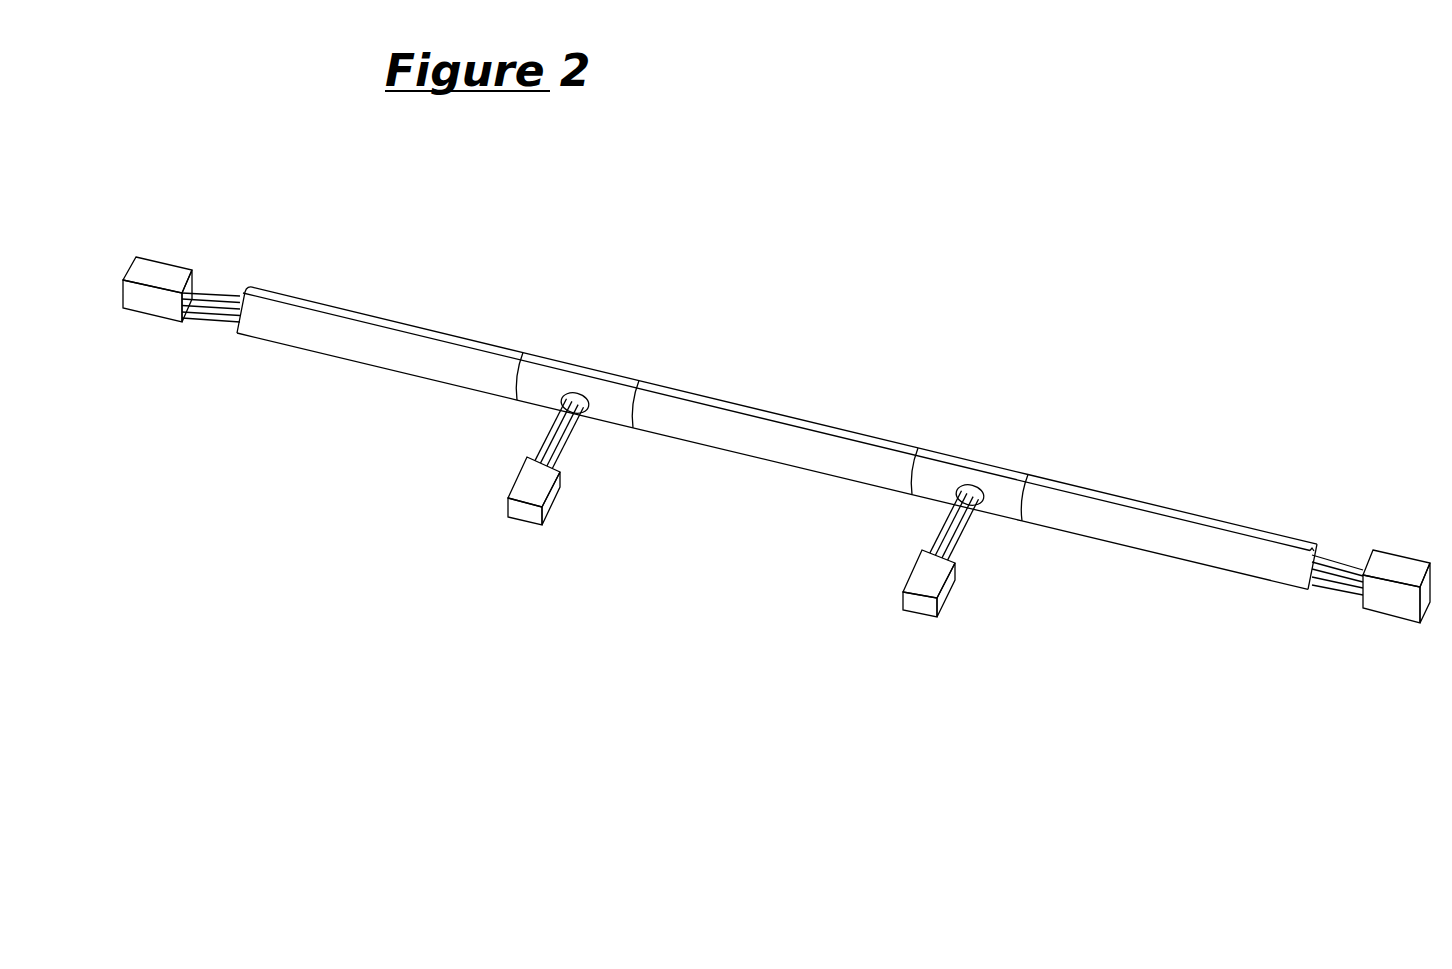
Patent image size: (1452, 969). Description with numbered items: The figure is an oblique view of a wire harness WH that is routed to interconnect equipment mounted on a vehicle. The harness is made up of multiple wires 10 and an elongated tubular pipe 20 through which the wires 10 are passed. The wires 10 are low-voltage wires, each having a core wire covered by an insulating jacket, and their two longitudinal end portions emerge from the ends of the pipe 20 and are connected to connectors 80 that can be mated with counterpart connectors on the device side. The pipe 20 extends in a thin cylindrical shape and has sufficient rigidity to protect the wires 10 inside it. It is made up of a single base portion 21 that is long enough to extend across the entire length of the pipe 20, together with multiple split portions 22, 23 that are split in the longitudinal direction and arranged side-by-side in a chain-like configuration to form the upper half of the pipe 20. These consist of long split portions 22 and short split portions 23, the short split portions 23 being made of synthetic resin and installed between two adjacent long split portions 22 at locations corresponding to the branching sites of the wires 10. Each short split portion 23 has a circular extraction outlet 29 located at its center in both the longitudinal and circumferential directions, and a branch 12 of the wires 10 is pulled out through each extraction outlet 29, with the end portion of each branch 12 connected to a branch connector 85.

The wire harness WH is at (775, 329).
The wires 10 is at (213, 293).
The branches 12 is at (567, 442).
The pipe 20 is at (837, 425).
The base portion 21 is at (887, 440).
The long split portions 22 is at (367, 355).
The short split portions 23 is at (535, 393).
The extraction outlets 29 is at (572, 390).
The connectors 80 is at (163, 268).
The branch connectors 85 is at (520, 512).